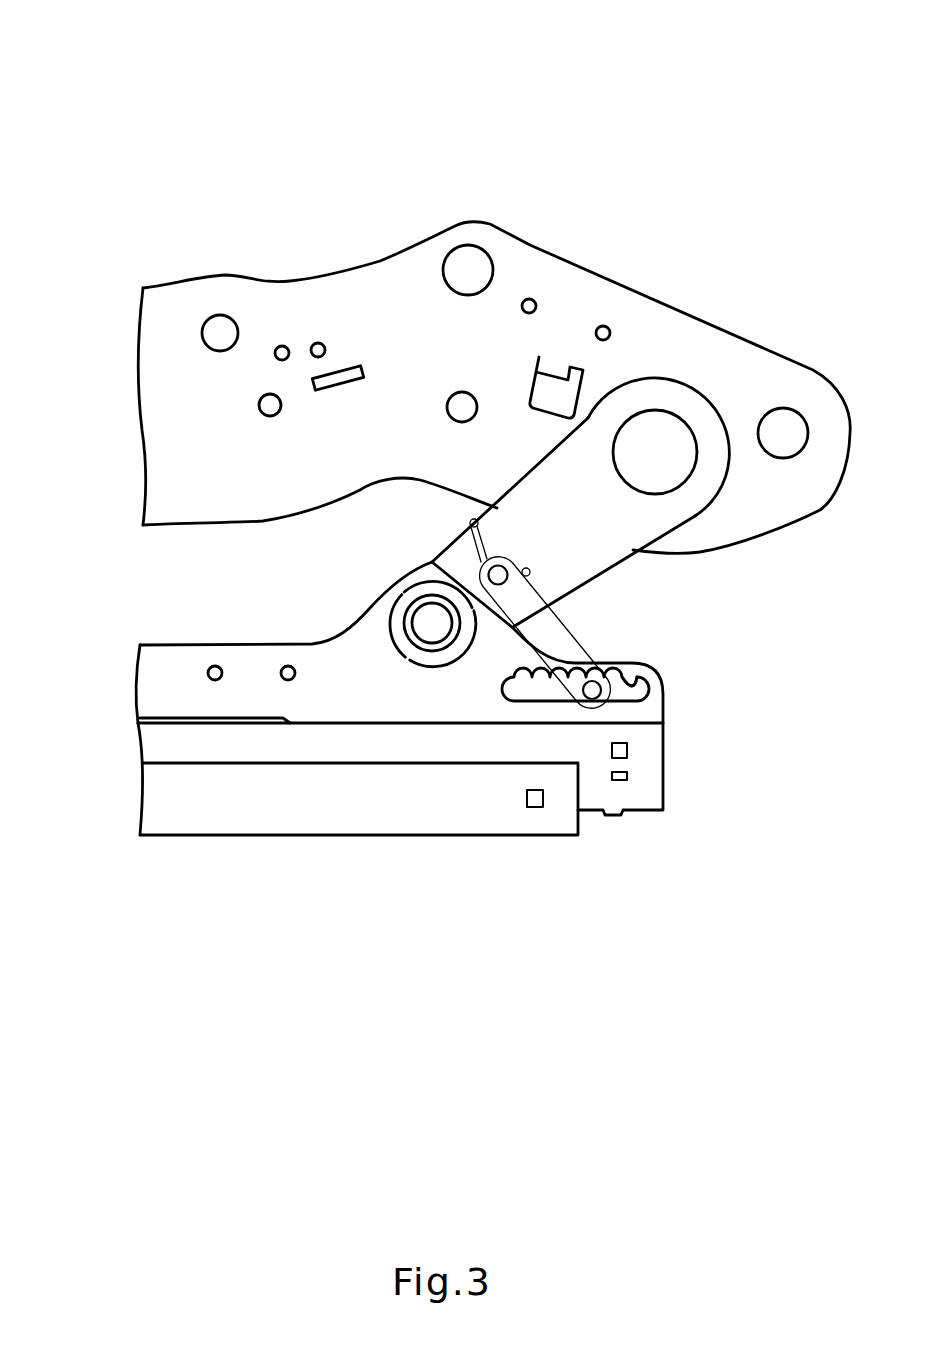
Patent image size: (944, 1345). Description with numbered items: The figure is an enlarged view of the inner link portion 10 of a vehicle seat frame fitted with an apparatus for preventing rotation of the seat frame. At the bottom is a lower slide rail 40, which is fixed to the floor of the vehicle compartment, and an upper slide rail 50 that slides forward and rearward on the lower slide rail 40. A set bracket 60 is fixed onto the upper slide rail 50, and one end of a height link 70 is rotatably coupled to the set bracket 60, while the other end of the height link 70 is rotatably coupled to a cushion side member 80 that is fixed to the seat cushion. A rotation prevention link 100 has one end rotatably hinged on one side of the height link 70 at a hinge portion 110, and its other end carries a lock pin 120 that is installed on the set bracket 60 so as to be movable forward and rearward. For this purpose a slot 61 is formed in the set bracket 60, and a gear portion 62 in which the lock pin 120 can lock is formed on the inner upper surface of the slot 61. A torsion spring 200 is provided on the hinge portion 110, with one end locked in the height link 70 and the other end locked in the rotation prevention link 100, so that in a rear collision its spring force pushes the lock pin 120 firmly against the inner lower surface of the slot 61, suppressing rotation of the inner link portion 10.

The inner link portion 10 is at (607, 97).
The lower slide rail 40 is at (287, 820).
The upper slide rail 50 is at (595, 787).
The set bracket 60 is at (406, 668).
The slot 61 is at (630, 696).
The gear portion 62 is at (648, 702).
The height link 70 is at (655, 400).
The cushion side member 80 is at (397, 268).
The rotation prevention link 100 is at (563, 647).
The hinge portion 110 is at (497, 588).
The lock pin 120 is at (595, 693).
The torsion spring 200 is at (471, 526).